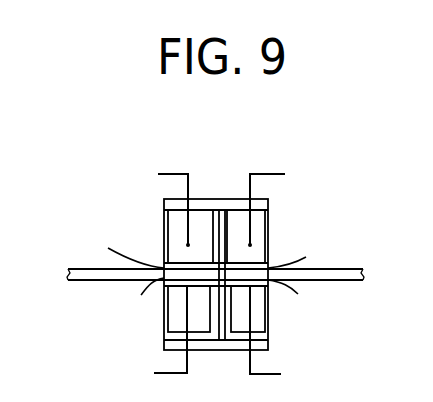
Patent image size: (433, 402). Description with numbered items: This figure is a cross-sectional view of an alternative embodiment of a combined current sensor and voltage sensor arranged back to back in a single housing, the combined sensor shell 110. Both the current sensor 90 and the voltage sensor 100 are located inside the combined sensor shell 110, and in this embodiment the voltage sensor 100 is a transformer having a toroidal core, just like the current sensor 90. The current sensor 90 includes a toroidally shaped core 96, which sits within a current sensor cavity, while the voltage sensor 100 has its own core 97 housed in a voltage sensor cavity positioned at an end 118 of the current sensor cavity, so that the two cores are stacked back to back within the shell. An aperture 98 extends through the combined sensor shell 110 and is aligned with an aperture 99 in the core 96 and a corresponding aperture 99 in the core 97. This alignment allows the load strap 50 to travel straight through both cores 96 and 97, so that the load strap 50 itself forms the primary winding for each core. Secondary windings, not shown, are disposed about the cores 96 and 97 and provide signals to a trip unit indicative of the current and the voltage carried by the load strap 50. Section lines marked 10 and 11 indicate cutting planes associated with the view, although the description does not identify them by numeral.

The first lead wire 10 is at (156, 275).
The second lead wire 11 is at (284, 277).
The load strap 50 is at (346, 268).
The current sensor 90 is at (160, 230).
The core 96 is at (198, 232).
The core 97 is at (257, 238).
The aperture 98 is at (223, 298).
The aperture 99 is at (211, 251).
The voltage sensor 100 is at (266, 321).
The combined sensor shell 110 is at (340, 194).
The end 118 is at (220, 213).